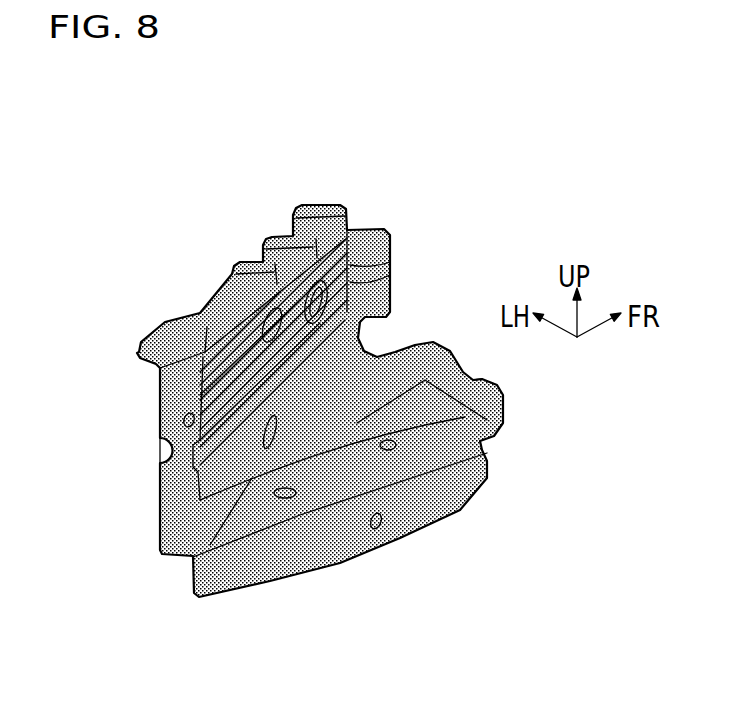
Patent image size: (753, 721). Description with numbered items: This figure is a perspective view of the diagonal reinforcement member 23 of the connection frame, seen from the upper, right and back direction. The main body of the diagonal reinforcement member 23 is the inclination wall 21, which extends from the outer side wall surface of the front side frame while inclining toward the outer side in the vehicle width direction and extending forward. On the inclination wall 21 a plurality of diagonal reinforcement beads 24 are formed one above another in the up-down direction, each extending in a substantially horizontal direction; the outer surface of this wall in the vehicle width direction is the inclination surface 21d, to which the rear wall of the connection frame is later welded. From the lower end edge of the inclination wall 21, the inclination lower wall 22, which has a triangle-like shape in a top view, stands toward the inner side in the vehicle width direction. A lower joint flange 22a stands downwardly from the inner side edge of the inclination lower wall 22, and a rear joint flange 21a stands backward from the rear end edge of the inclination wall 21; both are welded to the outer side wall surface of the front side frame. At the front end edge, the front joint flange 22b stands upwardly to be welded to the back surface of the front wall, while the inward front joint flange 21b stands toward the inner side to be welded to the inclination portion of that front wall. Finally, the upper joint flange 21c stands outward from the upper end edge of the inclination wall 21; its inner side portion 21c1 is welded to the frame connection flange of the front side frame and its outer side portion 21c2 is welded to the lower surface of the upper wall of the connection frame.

The diagonal reinforcement member 23 is at (456, 173).
The inclination wall 21 is at (262, 355).
The rear joint flange 21a is at (177, 503).
The inward front joint flange 21b is at (383, 256).
The upper joint flange 21c is at (202, 264).
The inner side portion of the upper joint flange 21c1 is at (158, 342).
The outer side portion of the upper joint flange 21c2 is at (278, 240).
The inclination surface 21d is at (237, 337).
The inclination lower wall 22 is at (394, 497).
The lower joint flange 22a is at (427, 512).
The front joint flange 22b is at (493, 383).
The diagonal reinforcement beads 24 is at (230, 385).